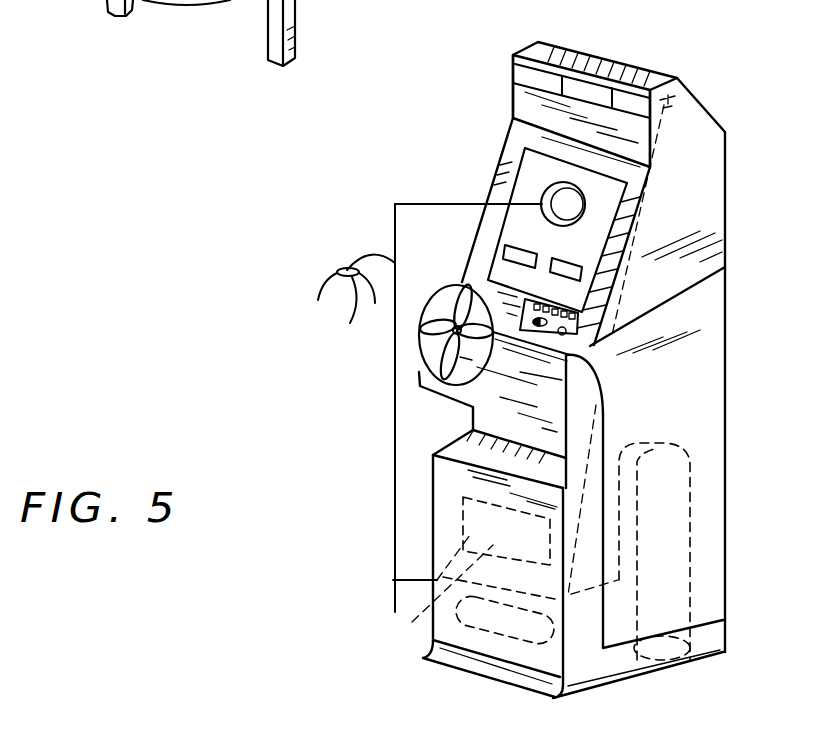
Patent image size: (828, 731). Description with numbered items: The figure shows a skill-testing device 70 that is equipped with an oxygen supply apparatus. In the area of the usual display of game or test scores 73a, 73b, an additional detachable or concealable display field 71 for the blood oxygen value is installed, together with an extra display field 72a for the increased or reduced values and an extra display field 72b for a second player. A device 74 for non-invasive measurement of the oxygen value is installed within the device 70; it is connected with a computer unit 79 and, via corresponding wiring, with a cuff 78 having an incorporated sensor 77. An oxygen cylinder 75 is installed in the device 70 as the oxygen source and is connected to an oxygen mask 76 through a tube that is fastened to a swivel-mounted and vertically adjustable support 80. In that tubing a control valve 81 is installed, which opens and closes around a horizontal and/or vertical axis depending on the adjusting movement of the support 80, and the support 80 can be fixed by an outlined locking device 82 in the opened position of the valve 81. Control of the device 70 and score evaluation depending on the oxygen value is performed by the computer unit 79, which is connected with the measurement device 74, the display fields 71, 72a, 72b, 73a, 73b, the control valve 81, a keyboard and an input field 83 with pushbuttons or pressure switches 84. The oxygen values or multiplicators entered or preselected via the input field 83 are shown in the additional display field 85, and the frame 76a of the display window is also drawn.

The skill-testing device 70 is at (372, 193).
The display field for the blood oxygen value 71 is at (598, 65).
The extra display field for the increased or reduced values 72a is at (510, 53).
The extra display field for a second player 72b is at (652, 80).
The display of game or test scores 73a is at (505, 248).
The display of game or test scores 73b is at (582, 273).
The device for non-invasive measurement of the oxygen value 74 is at (500, 623).
The oxygen cylinder 75 is at (682, 552).
The oxygen mask 76 is at (586, 204).
The display window frame 76a is at (527, 203).
The sensor 77 is at (356, 300).
The cuff 78 is at (330, 275).
The computer unit 79 is at (436, 582).
The support 80 is at (394, 497).
The control valve 81 is at (386, 204).
The locking device 82 is at (392, 207).
The input field 83 is at (604, 415).
The pushbuttons or pressure switches 84 is at (592, 358).
The additional display field 85 is at (578, 340).